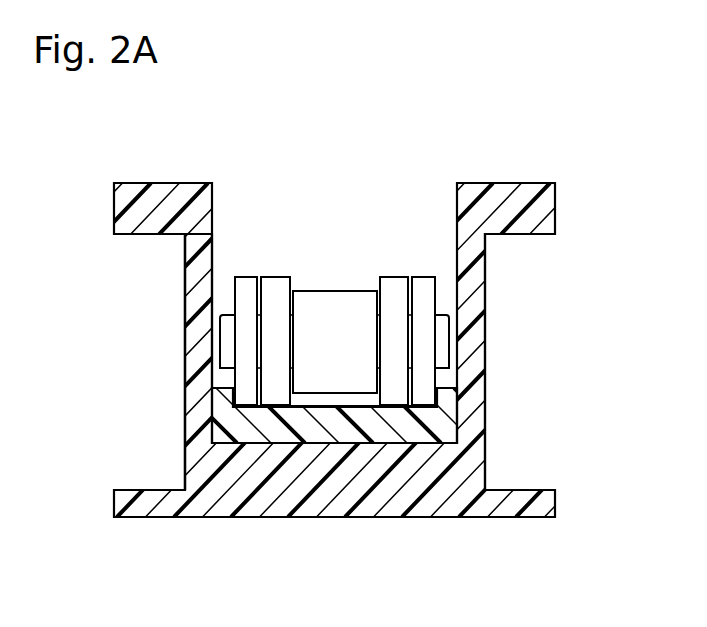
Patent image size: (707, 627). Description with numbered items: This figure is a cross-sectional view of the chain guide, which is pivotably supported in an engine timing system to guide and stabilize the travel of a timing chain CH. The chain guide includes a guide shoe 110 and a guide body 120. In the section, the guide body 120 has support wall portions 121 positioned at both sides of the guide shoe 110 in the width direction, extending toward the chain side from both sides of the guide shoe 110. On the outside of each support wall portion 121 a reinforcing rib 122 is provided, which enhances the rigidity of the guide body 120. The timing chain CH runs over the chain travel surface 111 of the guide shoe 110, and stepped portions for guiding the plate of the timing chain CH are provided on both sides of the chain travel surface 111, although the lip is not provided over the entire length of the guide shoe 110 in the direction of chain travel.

The guide shoe 110 is at (318, 430).
The chain travel surface 111 is at (332, 410).
The guide body 120 is at (217, 517).
The support wall portion 121 is at (187, 320).
The reinforcing rib 122 is at (145, 407).
The timing chain CH is at (340, 255).